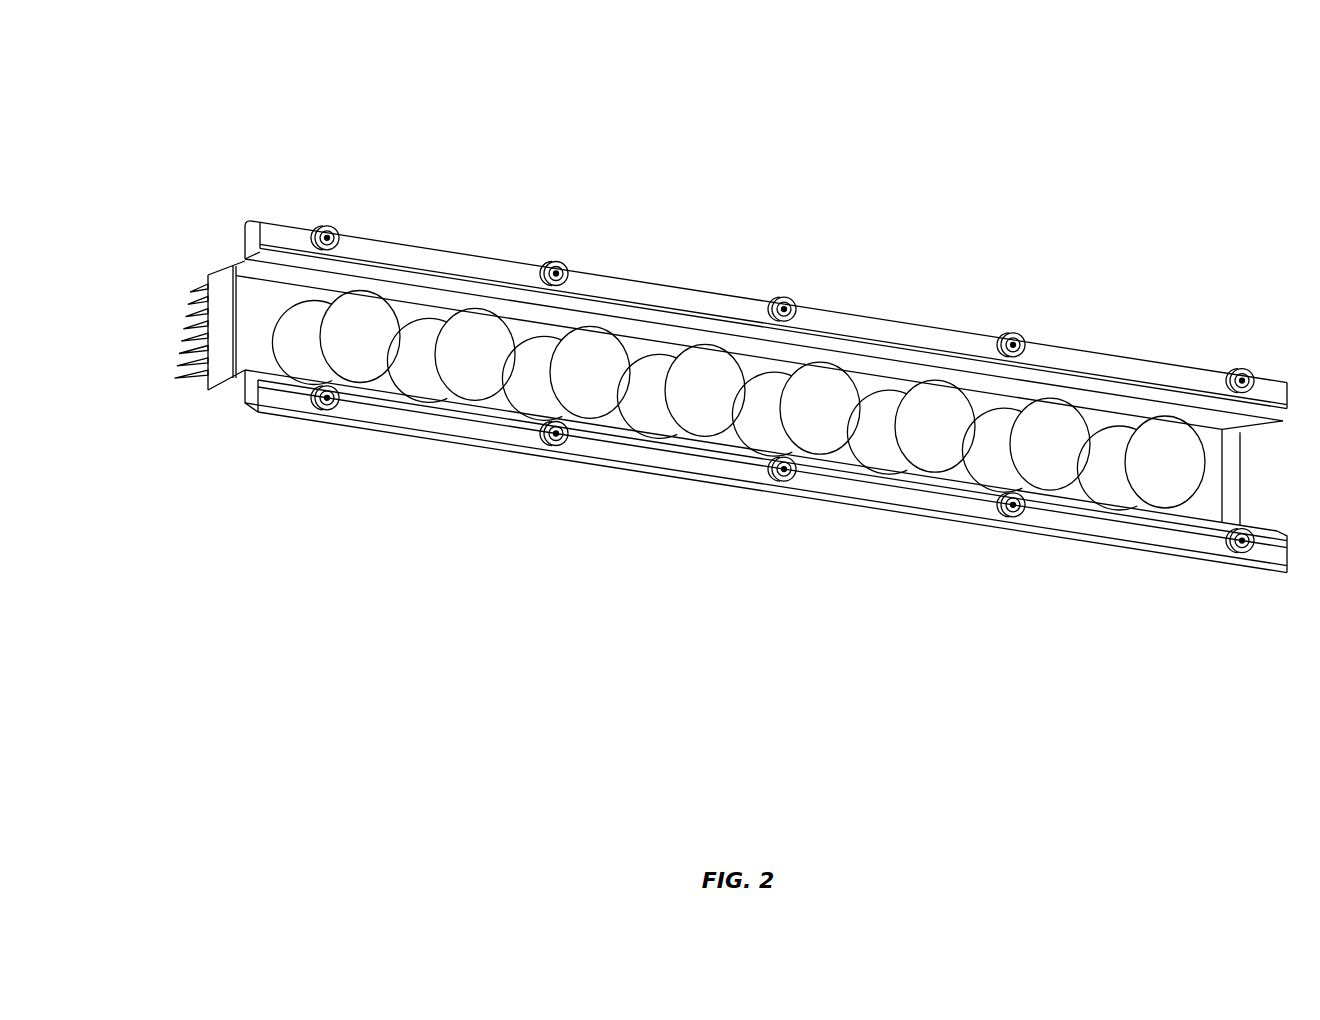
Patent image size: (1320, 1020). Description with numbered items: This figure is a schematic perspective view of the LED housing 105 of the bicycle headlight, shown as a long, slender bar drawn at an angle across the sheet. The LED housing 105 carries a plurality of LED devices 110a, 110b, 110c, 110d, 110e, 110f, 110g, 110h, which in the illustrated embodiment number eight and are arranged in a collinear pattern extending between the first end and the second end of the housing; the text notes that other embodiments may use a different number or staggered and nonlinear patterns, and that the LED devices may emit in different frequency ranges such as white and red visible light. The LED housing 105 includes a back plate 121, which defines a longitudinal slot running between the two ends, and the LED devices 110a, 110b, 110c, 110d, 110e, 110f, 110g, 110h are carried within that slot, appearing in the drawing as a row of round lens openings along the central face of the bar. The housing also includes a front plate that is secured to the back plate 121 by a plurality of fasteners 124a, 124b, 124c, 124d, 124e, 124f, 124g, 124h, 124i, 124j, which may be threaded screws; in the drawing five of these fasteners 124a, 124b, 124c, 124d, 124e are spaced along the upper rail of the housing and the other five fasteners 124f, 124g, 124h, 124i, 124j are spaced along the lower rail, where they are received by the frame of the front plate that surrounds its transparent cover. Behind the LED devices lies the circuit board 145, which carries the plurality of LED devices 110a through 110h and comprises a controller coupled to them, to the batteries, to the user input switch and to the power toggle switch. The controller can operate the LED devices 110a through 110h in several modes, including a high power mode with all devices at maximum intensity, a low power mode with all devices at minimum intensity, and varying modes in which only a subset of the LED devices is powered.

The LED housing 105 is at (870, 135).
The circuit board 145 is at (265, 313).
The back plate 121 is at (213, 390).
The fastener 124a is at (321, 230).
The fastener 124b is at (553, 266).
The fastener 124c is at (781, 300).
The fastener 124d is at (1010, 337).
The fastener 124e is at (1238, 372).
The fastener 124f is at (327, 410).
The fastener 124g is at (557, 447).
The fastener 124h is at (785, 483).
The fastener 124i is at (1013, 518).
The fastener 124j is at (1243, 554).
The LED device 110a is at (370, 358).
The LED device 110b is at (473, 380).
The LED device 110c is at (587, 393).
The LED device 110d is at (703, 413).
The LED device 110e is at (820, 430).
The LED device 110f is at (935, 446).
The LED device 110g is at (1050, 463).
The LED device 110h is at (1165, 480).